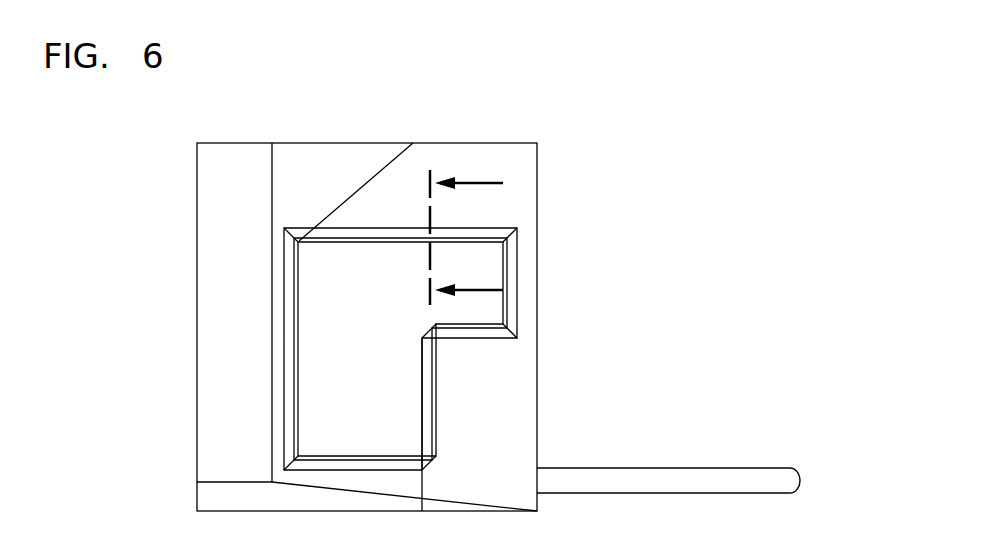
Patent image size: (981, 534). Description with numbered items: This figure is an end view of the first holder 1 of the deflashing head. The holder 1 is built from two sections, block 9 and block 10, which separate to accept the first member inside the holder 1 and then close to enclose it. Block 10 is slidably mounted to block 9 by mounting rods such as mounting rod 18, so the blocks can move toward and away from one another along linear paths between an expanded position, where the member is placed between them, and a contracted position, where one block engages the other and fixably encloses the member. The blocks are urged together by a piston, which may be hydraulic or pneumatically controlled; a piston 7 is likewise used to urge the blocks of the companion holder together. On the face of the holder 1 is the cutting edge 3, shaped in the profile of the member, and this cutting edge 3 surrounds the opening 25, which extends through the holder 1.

The first holder 1 is at (520, 93).
The cutting edge 3 is at (508, 303).
The piston 7 is at (413, 236).
The block 9 is at (328, 167).
The block 10 is at (532, 236).
The mounting rod 18 is at (745, 482).
The opening 25 is at (333, 377).